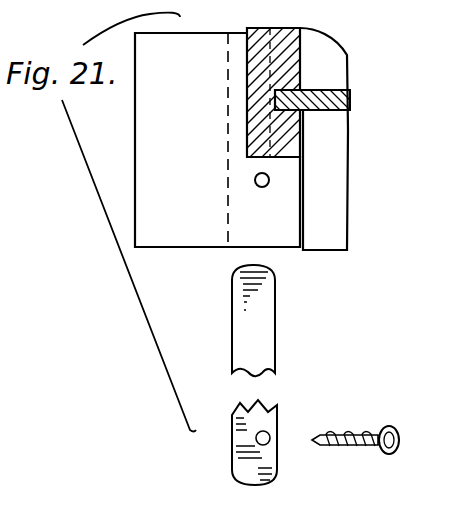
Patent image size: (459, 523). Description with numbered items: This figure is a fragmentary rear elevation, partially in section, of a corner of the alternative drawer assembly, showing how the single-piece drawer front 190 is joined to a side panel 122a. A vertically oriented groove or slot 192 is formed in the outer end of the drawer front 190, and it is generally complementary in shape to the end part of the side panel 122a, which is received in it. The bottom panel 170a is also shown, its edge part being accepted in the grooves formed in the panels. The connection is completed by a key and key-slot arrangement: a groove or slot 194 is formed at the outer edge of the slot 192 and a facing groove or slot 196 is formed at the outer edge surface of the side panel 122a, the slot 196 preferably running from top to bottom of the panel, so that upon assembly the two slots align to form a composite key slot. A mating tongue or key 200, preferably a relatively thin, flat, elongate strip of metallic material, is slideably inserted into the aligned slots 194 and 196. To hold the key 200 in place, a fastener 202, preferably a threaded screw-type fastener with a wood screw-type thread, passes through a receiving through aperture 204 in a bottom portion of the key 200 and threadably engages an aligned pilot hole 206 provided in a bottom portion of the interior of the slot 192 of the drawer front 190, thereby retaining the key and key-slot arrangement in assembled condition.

The drawer front 190 is at (200, 248).
The groove or slot 192 is at (300, 228).
The groove or slot 194 is at (241, 6).
The groove or slot 196 is at (265, 16).
The side panel 122a is at (300, 50).
The bottom panel 170a is at (348, 98).
The tongue or key 200 is at (263, 322).
The fastener 202 is at (358, 434).
The receiving through aperture 204 is at (275, 432).
The pilot hole 206 is at (254, 182).